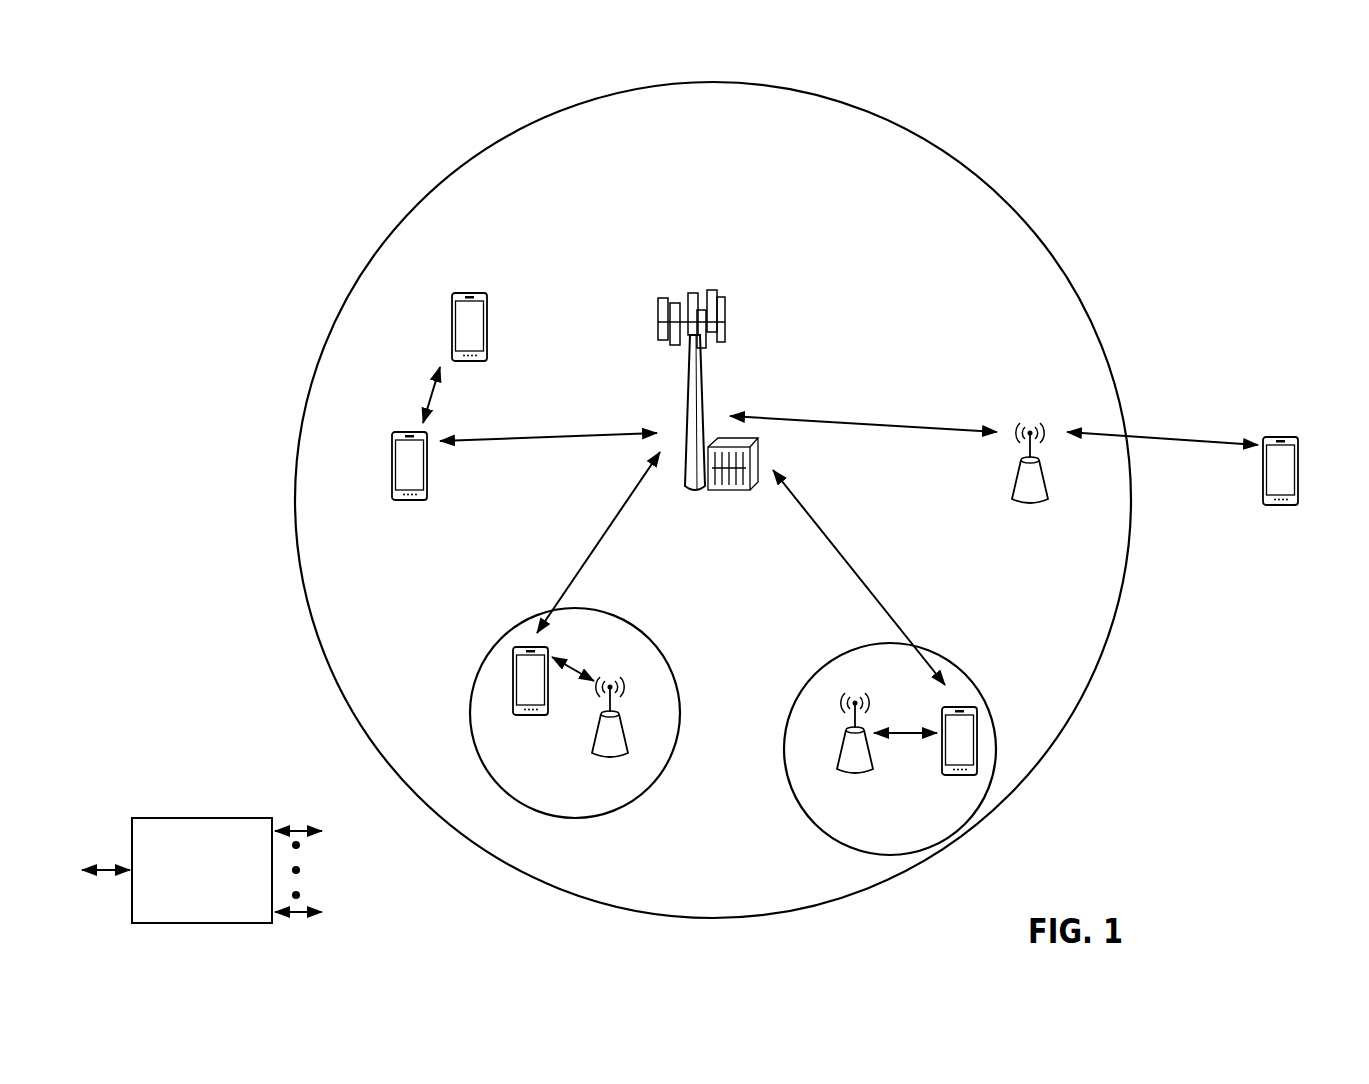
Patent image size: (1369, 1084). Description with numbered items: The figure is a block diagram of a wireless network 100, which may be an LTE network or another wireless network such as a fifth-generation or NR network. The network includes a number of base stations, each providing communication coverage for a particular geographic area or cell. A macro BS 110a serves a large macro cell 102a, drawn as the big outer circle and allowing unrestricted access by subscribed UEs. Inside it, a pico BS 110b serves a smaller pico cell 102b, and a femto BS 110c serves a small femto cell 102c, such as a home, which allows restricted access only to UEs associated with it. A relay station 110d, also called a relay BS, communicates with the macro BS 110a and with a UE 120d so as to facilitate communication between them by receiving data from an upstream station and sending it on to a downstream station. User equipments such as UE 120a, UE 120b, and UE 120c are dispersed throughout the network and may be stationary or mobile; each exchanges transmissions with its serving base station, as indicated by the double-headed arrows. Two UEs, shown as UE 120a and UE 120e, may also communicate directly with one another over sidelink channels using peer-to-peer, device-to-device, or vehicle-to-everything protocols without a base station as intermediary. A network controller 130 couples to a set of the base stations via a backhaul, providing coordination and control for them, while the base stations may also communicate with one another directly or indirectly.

The wireless network 100 is at (186, 78).
The macro cell 102a is at (991, 186).
The pico cell 102b is at (664, 652).
The femto cell 102c is at (830, 660).
The macro BS 110a is at (699, 280).
The pico BS 110b is at (625, 747).
The femto BS 110c is at (838, 765).
The relay station 110d is at (1027, 420).
The UE 120a is at (392, 465).
The UE 120b is at (518, 715).
The UE 120c is at (942, 775).
The UE 120d is at (1291, 437).
The UE 120e is at (452, 315).
The network controller 130 is at (197, 818).